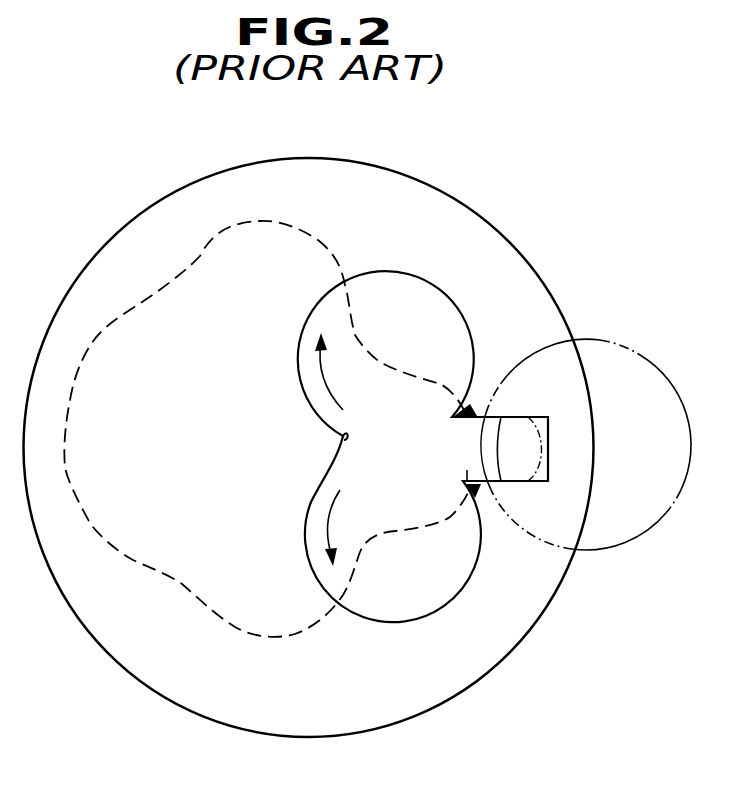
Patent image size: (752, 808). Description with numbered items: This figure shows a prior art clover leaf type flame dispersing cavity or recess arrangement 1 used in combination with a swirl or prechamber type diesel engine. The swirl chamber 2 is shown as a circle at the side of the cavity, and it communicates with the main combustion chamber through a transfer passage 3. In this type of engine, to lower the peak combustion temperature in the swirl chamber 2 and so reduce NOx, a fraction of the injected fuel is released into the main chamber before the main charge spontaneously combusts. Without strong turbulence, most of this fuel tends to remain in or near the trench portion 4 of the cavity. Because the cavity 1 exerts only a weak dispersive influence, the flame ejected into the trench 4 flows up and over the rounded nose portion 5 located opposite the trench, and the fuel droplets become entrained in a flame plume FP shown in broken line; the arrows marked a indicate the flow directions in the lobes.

The flame plume FP is at (98, 338).
The flame dispersing cavity 1 is at (380, 306).
The swirl chamber 2 is at (599, 339).
The transfer passage 3 is at (523, 433).
The trench portion 4 is at (490, 440).
The rounded nose portion 5 is at (340, 429).
The rotation direction a is at (348, 449).